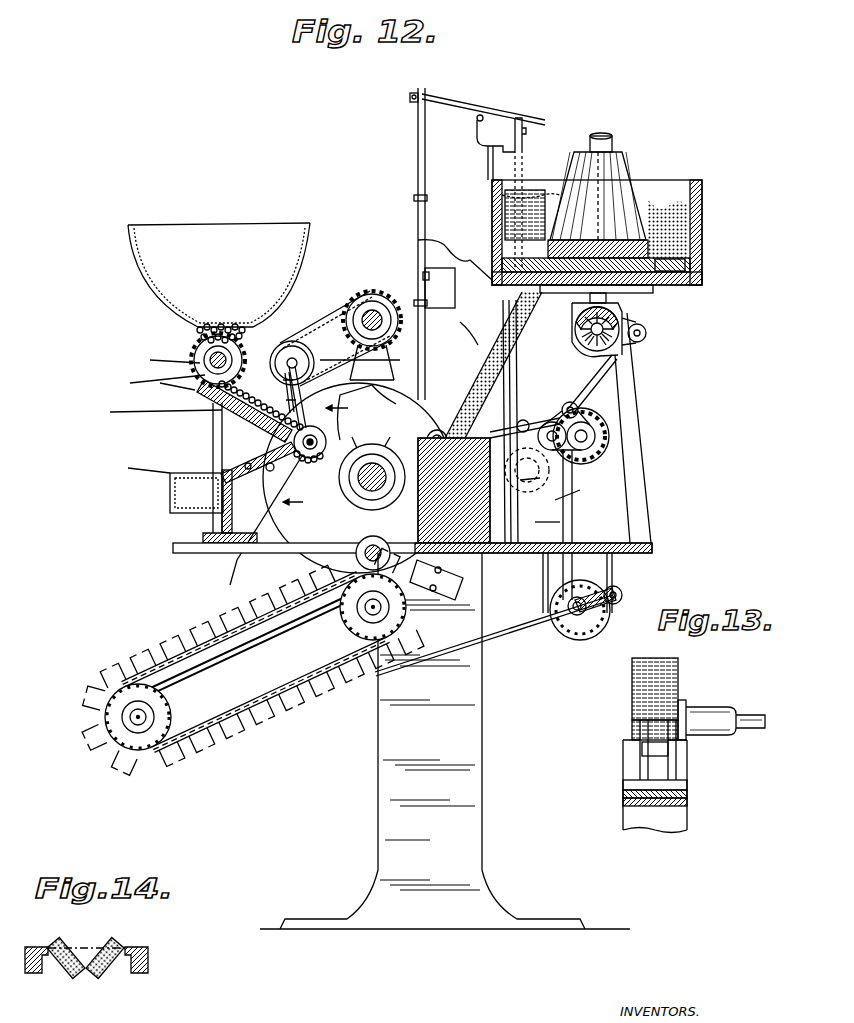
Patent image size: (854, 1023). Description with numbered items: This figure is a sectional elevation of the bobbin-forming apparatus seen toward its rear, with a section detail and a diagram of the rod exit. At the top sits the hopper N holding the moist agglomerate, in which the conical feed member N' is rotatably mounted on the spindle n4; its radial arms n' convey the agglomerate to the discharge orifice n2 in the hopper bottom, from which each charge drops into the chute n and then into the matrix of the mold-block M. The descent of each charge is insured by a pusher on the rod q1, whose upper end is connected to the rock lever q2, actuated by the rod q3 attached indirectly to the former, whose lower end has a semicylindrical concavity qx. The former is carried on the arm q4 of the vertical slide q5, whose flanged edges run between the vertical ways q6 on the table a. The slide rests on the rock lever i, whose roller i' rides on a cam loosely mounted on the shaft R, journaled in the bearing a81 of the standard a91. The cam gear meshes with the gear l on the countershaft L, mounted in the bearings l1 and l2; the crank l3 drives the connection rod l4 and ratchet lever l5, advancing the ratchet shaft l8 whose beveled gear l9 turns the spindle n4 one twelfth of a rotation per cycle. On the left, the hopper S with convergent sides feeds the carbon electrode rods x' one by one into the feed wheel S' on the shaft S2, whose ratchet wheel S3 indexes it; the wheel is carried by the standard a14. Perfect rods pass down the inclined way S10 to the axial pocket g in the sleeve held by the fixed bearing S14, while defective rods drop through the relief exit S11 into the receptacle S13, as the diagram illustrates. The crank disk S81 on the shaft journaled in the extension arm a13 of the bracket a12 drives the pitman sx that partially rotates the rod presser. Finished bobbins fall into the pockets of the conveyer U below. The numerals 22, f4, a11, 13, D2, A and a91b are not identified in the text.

In FIG. 12, the hopper S is at (219, 277).
In FIG. 13, the hopper S is at (671, 699).
In FIG. 12, the carbon electrode rods x' is at (252, 376).
In FIG. 14, the carbon electrode rods x' is at (86, 967).
In FIG. 12, the feed wheel S' is at (228, 360).
In FIG. 13, the feed wheel S' is at (637, 749).
In FIG. 12, the shaft S2 is at (164, 357).
In FIG. 13, the shaft S2 is at (752, 730).
In FIG. 12, the ratchet wheel S3 is at (151, 381).
In FIG. 12, the relief exit S11 is at (180, 411).
In FIG. 13, the relief exit S11 is at (642, 748).
In FIG. 14, the relief exit S11 is at (55, 972).
In FIG. 12, the inclined way S10 is at (222, 422).
In FIG. 13, the inclined way S10 is at (648, 772).
In FIG. 14, the inclined way S10 is at (140, 972).
In FIG. 12, the receptacle S13 is at (196, 493).
In FIG. 12, the standard a14 is at (133, 465).
In FIG. 12, the crank disk S81 is at (293, 343).
In FIG. 12, the pitman sx is at (284, 410).
In FIG. 12, the arm 22 is at (258, 443).
In FIG. 12, the axial pocket g is at (305, 458).
In FIG. 13, the axial pocket g is at (680, 796).
In FIG. 12, the fixed bearing S14 is at (252, 523).
In FIG. 12, the gear f4 is at (368, 302).
In FIG. 12, the belt a11 is at (348, 318).
In FIG. 12, the bracket a12 is at (373, 355).
In FIG. 12, the extension arm a13 is at (374, 412).
In FIG. 13, the extension arm a13 is at (714, 707).
In FIG. 12, the direction arrows 13 is at (326, 456).
In FIG. 12, the semicylindrical concavity qx is at (377, 441).
In FIG. 12, the rod q3 is at (402, 244).
In FIG. 12, the rock lever q2 is at (470, 108).
In FIG. 12, the rod q1 is at (528, 124).
In FIG. 12, the arm q4 is at (443, 255).
In FIG. 12, the vertical slide q5 is at (425, 305).
In FIG. 12, the vertical ways q6 is at (463, 325).
In FIG. 12, the gear l is at (492, 245).
In FIG. 12, the hopper N is at (690, 229).
In FIG. 12, the radial arms n' is at (729, 269).
In FIG. 12, the conical feed member N' is at (611, 179).
In FIG. 12, the spindle n4 is at (620, 235).
In FIG. 12, the discharge orifice n2 is at (492, 367).
In FIG. 12, the ratchet shaft l8 is at (620, 310).
In FIG. 12, the ratchet lever l5 is at (646, 333).
In FIG. 12, the beveled gear l9 is at (650, 345).
In FIG. 12, the connection rod l4 is at (605, 385).
In FIG. 12, the countershaft L is at (600, 436).
In FIG. 12, the crank l3 is at (578, 410).
In FIG. 12, the rock lever i is at (525, 409).
In FIG. 12, the roller i' is at (454, 435).
In FIG. 12, the shaft R is at (530, 470).
In FIG. 12, the bearing a81 is at (520, 490).
In FIG. 12, the standard a91 is at (540, 520).
In FIG. 12, the bearing l1 is at (560, 499).
In FIG. 12, the disk D2 is at (358, 478).
In FIG. 12, the mold-block M is at (412, 495).
In FIG. 12, the table a is at (372, 477).
In FIG. 12, the chute n is at (376, 546).
In FIG. 12, the column A is at (445, 741).
In FIG. 12, the conveyer U is at (250, 664).
In FIG. 12, the bracket a91b is at (436, 580).
In FIG. 12, the bearing l2 is at (498, 614).